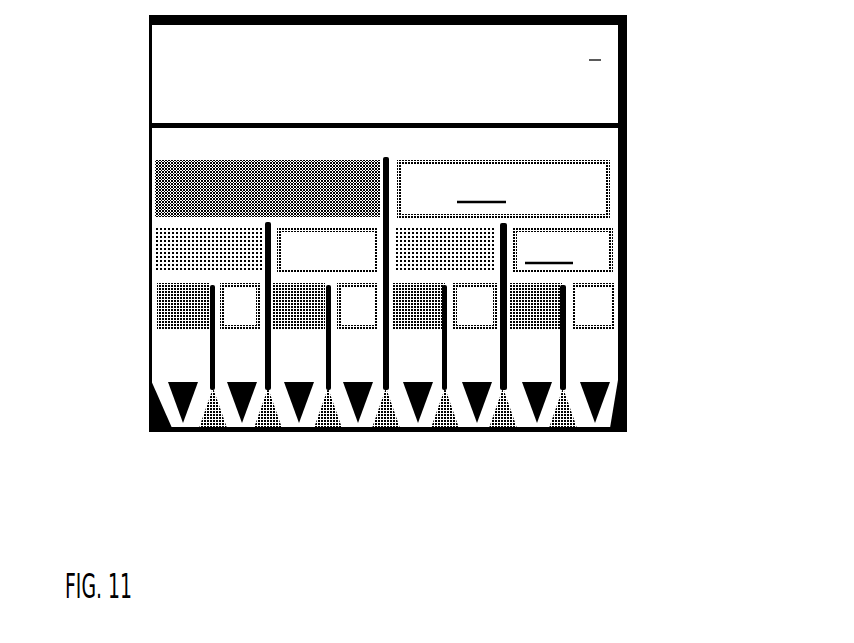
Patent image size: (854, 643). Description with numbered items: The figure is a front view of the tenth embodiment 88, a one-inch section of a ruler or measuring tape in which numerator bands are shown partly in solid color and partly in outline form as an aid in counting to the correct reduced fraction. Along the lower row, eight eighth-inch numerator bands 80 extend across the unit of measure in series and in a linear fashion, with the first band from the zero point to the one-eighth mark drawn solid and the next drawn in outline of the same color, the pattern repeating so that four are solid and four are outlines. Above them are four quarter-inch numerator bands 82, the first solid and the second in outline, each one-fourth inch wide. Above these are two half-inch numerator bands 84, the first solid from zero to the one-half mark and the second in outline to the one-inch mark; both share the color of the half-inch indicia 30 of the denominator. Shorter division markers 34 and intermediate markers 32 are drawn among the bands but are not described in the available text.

The tenth embodiment 88 is at (650, 235).
The half-inch numerator band 84 is at (202, 200).
The quarter-inch numerator band 82 is at (190, 252).
The eighth-inch numerator band 80 is at (183, 299).
The short electrode pin 34 is at (213, 432).
The medium electrode pin 32 is at (265, 432).
The half-inch indicia 30 is at (385, 432).